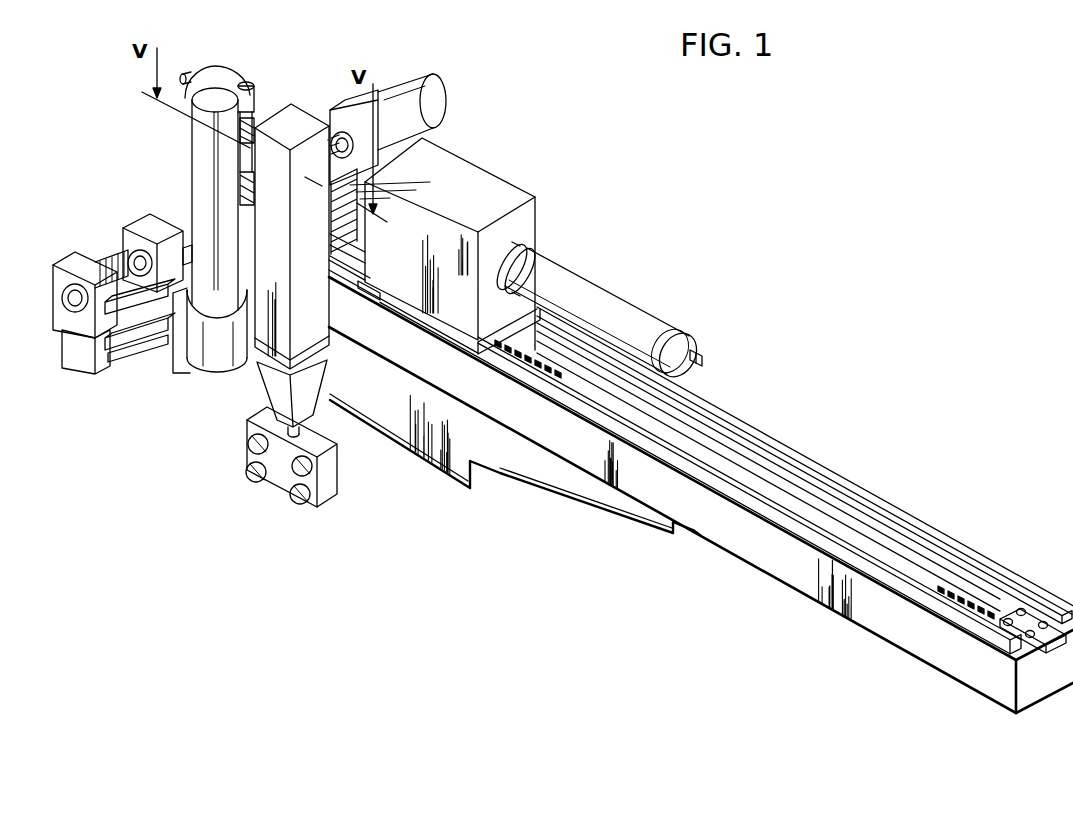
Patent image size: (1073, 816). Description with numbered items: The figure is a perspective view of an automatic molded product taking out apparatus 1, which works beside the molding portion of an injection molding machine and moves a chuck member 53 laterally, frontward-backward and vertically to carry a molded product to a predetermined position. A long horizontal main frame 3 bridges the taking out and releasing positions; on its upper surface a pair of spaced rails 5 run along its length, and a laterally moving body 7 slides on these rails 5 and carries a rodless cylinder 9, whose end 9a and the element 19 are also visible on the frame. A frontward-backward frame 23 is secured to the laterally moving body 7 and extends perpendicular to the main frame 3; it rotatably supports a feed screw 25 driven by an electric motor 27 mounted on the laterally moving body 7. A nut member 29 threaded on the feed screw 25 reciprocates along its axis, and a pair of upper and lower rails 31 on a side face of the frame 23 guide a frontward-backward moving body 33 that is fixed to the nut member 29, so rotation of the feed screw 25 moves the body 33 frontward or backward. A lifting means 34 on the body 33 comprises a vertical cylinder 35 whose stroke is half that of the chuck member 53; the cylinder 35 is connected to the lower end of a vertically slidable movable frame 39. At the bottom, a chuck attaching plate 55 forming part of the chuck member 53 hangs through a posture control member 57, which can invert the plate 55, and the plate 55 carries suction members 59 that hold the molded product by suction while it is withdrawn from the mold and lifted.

The automatic molded product taking out apparatus 1 is at (798, 242).
The main frame 3 is at (730, 537).
The rails 5 is at (993, 577).
The laterally moving body 7 is at (507, 201).
The rodless cylinder 9 is at (648, 329).
The piston rod end 9a is at (705, 363).
The feed screw 19 is at (905, 558).
The frontward-backward frame 23 is at (80, 366).
The feed screw 25 is at (122, 263).
The electric motor 27 is at (432, 104).
The nut member 29 is at (157, 227).
The upper and lower rails 31 is at (138, 354).
The frontward-backward moving body 33 is at (183, 347).
The lifting means 34 is at (203, 176).
The vertical cylinder 35 is at (200, 160).
The movable frame 39 is at (319, 296).
The chuck member 53 is at (280, 490).
The chuck attaching plate 55 is at (328, 478).
The posture control member 57 is at (290, 391).
The suction members 59 is at (250, 473).